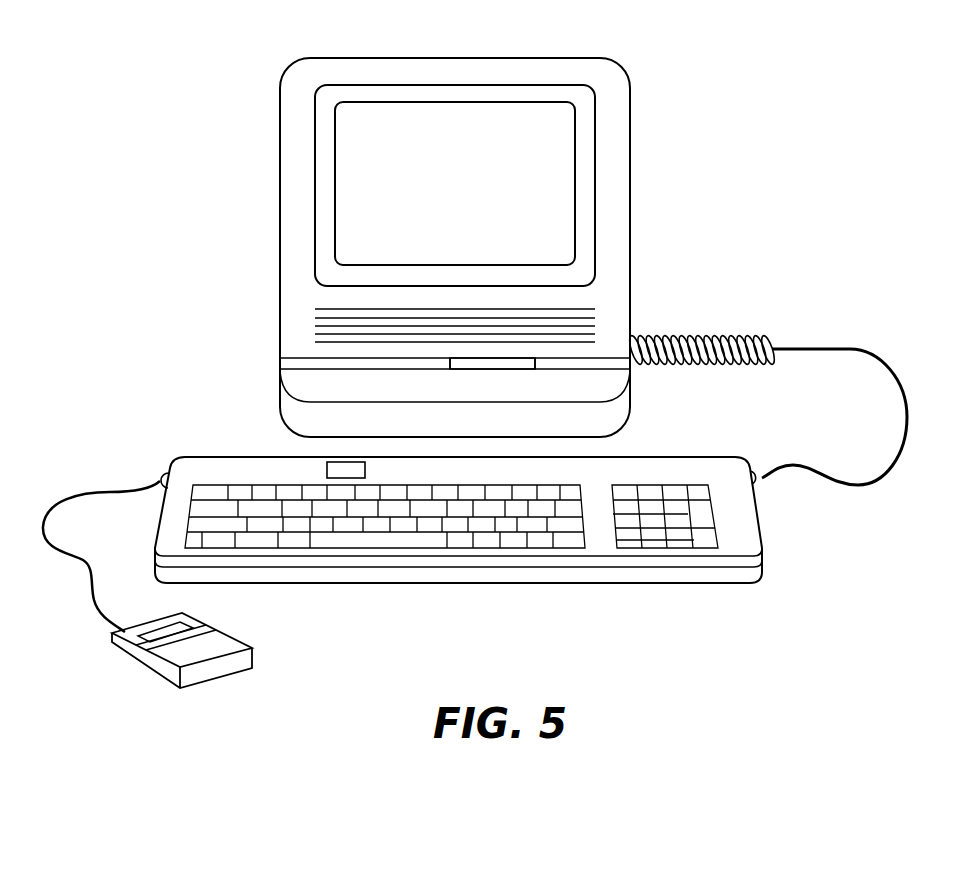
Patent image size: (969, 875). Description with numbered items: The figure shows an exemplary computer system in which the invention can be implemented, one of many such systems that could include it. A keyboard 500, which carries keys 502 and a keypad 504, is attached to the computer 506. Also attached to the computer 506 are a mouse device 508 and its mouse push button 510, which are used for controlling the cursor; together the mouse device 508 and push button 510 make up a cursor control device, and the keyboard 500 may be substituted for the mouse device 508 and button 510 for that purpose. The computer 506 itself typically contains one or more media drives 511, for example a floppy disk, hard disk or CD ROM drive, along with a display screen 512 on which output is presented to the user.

The keyboard 500 is at (747, 532).
The keys 502 is at (480, 537).
The keypad 504 is at (678, 540).
The computer 506 is at (632, 132).
The mouse device 508 is at (233, 670).
The mouse push button 510 is at (158, 628).
The media drive 511 is at (483, 365).
The display screen 512 is at (505, 123).